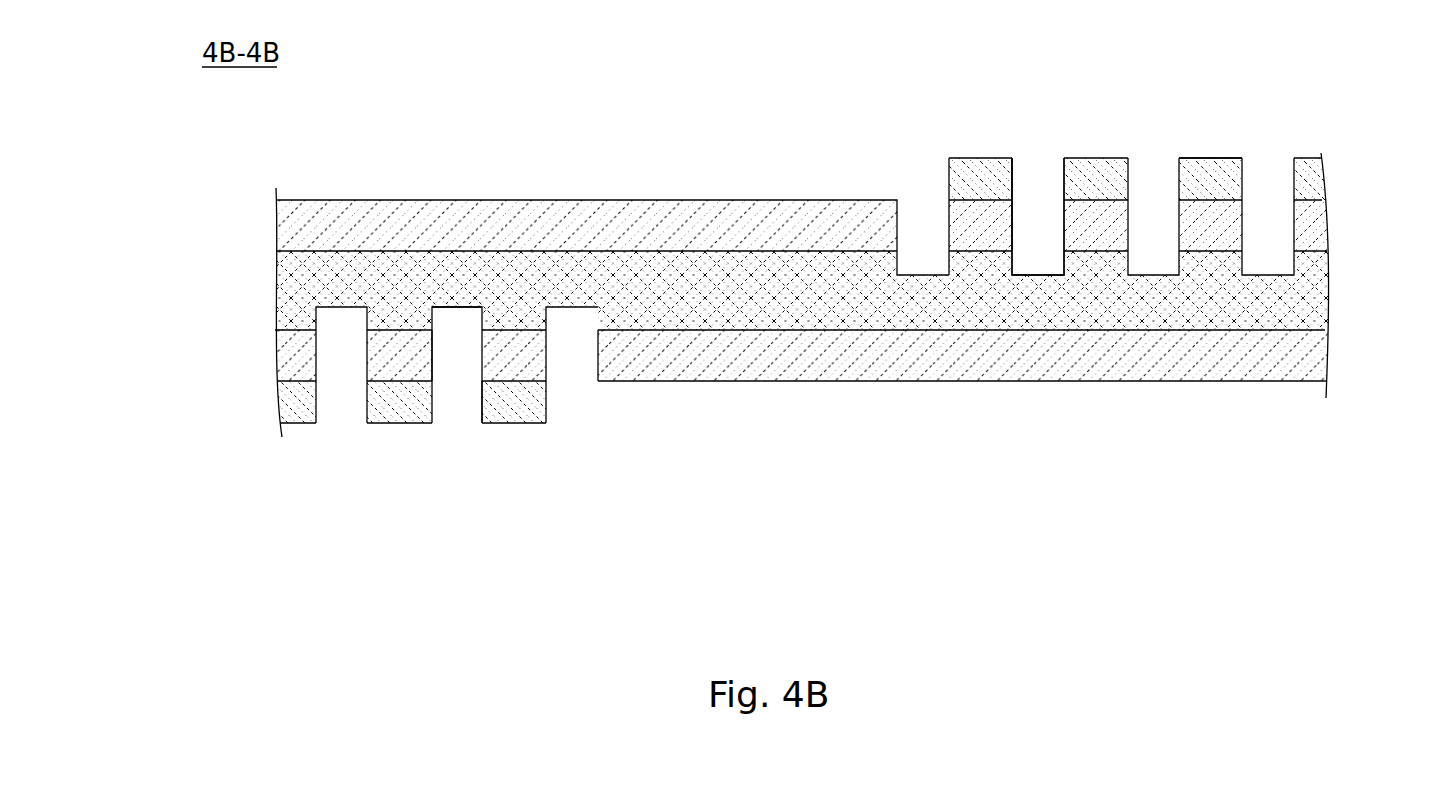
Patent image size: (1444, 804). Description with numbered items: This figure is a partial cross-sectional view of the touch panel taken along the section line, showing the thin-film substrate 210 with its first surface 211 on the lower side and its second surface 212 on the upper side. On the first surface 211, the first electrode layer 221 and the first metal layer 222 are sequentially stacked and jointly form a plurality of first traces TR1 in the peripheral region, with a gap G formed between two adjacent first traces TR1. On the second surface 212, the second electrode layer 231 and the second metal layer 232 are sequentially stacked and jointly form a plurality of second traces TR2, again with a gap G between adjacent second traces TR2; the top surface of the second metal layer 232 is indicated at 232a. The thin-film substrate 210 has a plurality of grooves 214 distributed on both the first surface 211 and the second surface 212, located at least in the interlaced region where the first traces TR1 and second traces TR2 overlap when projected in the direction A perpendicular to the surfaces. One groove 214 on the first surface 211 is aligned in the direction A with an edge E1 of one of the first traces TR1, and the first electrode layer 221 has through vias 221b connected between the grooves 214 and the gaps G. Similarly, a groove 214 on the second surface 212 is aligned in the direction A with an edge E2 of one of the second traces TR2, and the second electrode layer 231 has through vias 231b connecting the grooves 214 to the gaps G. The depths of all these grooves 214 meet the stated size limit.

The thin-film substrate 210 is at (298, 283).
The first surface 211 is at (645, 330).
The second surface 212 is at (551, 248).
The groove 214 is at (457, 294).
The first electrode layer 221 is at (282, 353).
The first metal layer 222 is at (282, 389).
The through via 221b is at (418, 329).
The second electrode layer 231 is at (958, 210).
The through via 231b is at (1008, 216).
The second metal layer 232 is at (952, 176).
The top surface of layer 232 232a is at (1210, 170).
The first trace TR1 is at (142, 342).
The second trace TR2 is at (748, 107).
The gap G is at (450, 414).
The edge E1 is at (481, 400).
The edge E2 is at (1013, 172).
The direction A is at (1431, 357).